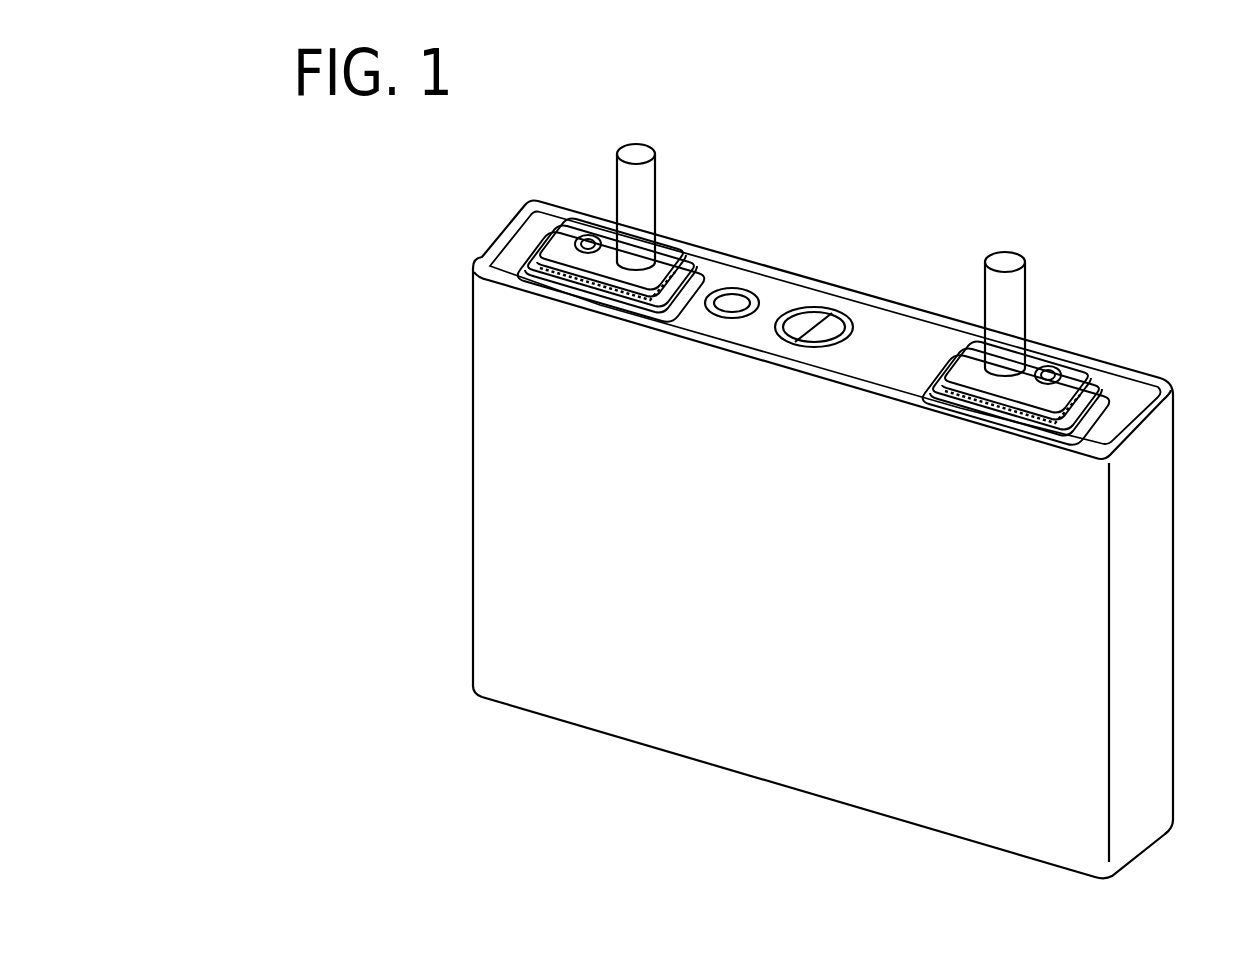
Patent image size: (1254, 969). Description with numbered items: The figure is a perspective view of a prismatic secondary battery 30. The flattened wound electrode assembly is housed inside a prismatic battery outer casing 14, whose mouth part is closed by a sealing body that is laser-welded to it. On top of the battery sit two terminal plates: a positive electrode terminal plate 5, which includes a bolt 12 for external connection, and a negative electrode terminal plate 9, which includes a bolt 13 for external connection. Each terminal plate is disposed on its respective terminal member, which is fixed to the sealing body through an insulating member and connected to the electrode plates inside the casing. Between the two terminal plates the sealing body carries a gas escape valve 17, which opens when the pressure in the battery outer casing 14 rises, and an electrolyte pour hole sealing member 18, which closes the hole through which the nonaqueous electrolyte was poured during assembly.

The prismatic secondary battery 30 is at (1190, 77).
The battery outer casing 14 is at (538, 535).
The positive electrode terminal plate 5 is at (561, 238).
The negative electrode terminal plate 9 is at (1090, 352).
The bolt 12 is at (628, 183).
The bolt 13 is at (1017, 318).
The gas escape valve 17 is at (837, 318).
The electrolyte pour hole sealing member 18 is at (738, 293).